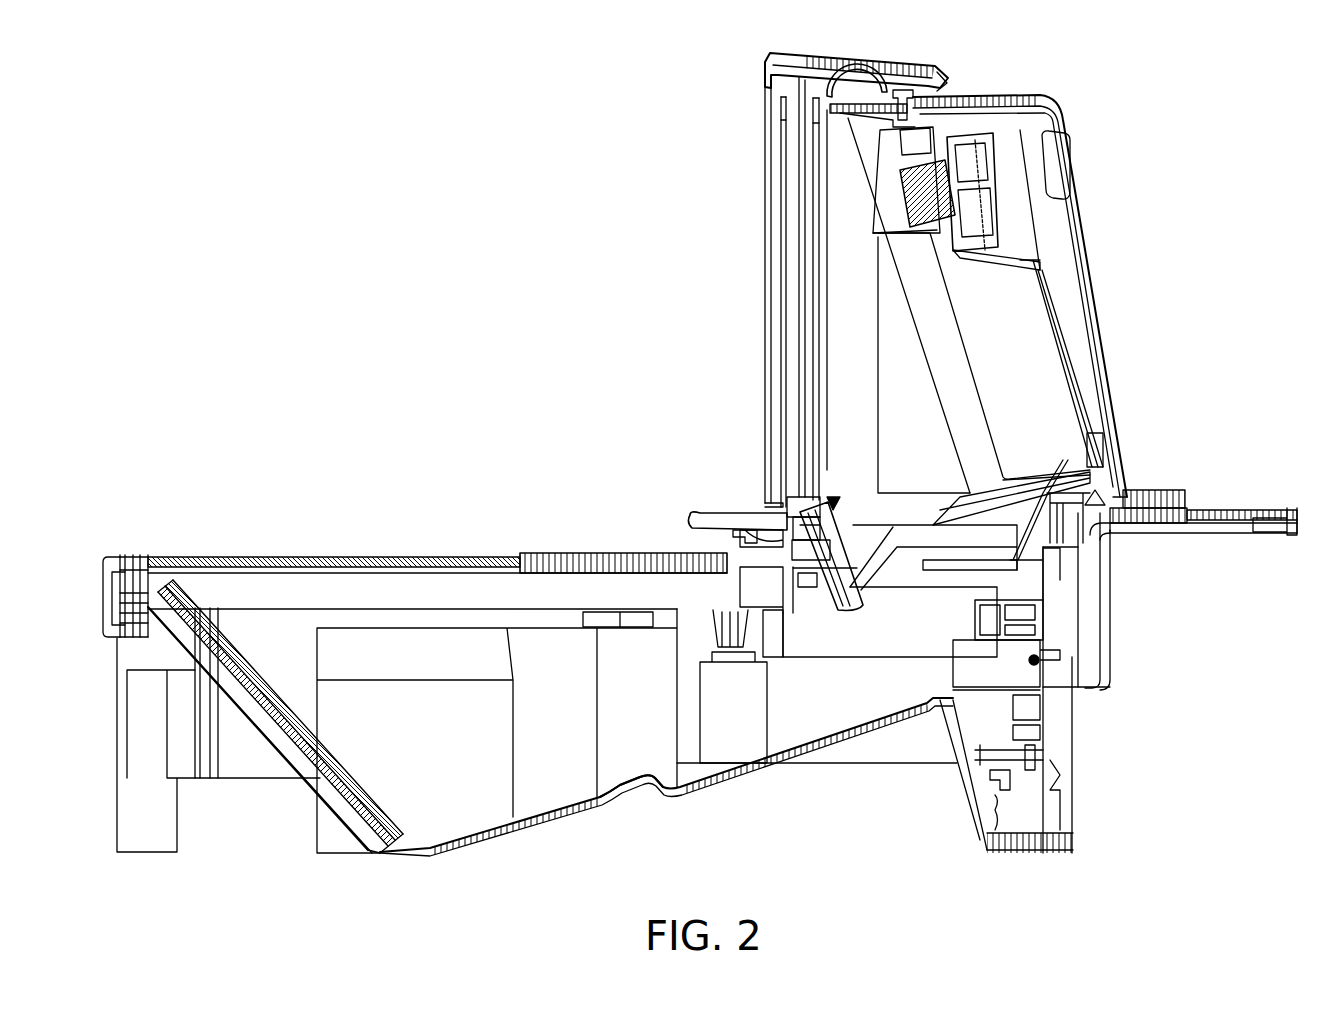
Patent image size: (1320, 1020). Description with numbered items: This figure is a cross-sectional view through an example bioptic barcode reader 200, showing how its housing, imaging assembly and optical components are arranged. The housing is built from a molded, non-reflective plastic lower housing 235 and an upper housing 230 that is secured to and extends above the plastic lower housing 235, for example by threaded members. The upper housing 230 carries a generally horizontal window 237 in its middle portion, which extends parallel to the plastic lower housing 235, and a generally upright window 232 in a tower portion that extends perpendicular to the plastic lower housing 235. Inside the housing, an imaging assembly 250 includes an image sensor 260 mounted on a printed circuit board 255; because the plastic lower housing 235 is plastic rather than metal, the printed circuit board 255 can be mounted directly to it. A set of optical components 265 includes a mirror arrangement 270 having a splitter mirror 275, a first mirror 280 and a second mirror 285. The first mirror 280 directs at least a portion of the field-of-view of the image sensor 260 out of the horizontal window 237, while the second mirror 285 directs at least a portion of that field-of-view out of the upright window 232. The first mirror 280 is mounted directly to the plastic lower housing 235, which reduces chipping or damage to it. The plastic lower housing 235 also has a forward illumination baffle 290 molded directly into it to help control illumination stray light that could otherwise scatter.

The bioptic barcode reader 200 is at (297, 208).
The upper housing 230 is at (1012, 100).
The upright window 232 is at (768, 216).
The plastic lower housing 235 is at (582, 822).
The horizontal window 237 is at (240, 556).
The imaging assembly 250 is at (1058, 589).
The printed circuit board 255 is at (1047, 675).
The image sensor 260 is at (975, 606).
The optical components 265 is at (833, 512).
The mirror arrangement 270 is at (816, 528).
The splitter mirror 275 is at (855, 613).
The first mirror 280 is at (305, 737).
The second mirror 285 is at (1040, 348).
The forward illumination baffle 290 is at (638, 797).